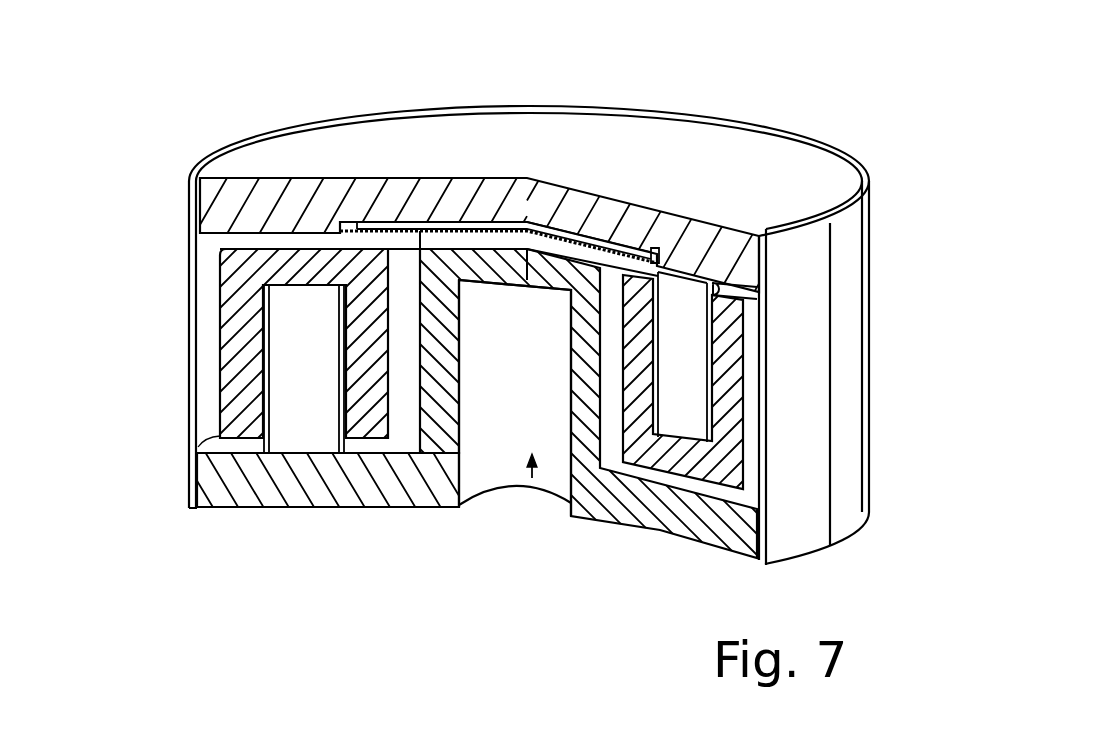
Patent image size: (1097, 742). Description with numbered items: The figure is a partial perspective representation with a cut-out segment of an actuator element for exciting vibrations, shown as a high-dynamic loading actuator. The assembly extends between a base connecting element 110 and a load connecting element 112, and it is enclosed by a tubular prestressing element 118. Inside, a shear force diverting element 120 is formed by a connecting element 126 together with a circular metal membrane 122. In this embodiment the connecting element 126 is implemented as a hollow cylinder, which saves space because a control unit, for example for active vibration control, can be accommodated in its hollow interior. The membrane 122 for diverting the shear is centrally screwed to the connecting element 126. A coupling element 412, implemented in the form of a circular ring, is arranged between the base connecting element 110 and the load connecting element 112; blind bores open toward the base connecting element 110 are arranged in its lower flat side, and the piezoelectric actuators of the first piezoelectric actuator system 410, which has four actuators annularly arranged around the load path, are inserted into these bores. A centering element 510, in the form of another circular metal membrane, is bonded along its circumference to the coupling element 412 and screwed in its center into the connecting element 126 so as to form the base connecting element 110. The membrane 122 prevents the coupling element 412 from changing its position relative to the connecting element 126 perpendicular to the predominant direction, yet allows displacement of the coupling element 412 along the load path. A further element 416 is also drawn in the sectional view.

The base connecting element 110 is at (368, 484).
The load connecting element 112 is at (722, 153).
The tubular prestressing element 118 is at (842, 363).
The shear force diverting element 120 is at (538, 497).
The circular metal membrane 122 is at (388, 250).
The connecting element 126 is at (450, 397).
The first piezoelectric actuator system 410 is at (680, 427).
The coupling element 412 is at (252, 425).
The first coil 416 is at (283, 363).
The centering element 510 is at (618, 250).